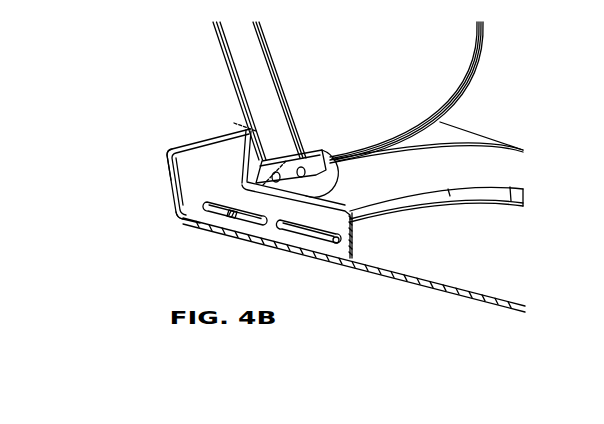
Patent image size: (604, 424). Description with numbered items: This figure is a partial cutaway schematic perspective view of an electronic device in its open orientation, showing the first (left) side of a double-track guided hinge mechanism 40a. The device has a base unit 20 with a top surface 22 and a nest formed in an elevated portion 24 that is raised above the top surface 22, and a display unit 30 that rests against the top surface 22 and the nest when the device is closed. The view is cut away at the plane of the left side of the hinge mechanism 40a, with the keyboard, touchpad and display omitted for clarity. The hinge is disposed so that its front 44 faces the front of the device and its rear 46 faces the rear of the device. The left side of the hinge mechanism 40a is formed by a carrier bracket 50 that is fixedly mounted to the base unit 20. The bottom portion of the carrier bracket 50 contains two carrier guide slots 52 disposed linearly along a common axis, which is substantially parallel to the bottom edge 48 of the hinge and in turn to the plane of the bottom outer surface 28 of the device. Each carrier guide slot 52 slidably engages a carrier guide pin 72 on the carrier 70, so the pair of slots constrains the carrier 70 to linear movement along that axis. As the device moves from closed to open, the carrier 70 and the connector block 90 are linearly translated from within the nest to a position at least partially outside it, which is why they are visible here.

The base unit 20 is at (476, 300).
The top surface 22 is at (487, 165).
The elevated portion 24 is at (233, 122).
The bottom outer surface 28 is at (426, 294).
The display unit 30 is at (227, 58).
The hinge mechanism 40a is at (191, 260).
The front of the hinge mechanism 44 is at (360, 243).
The rear of the hinge mechanism 46 is at (164, 168).
The bottom edge 48 is at (190, 237).
The carrier bracket 50 is at (197, 165).
The carrier guide slots 52 is at (214, 214).
The carrier 70 is at (283, 170).
The carrier guide pins 72 is at (257, 222).
The connector block 90 is at (313, 183).